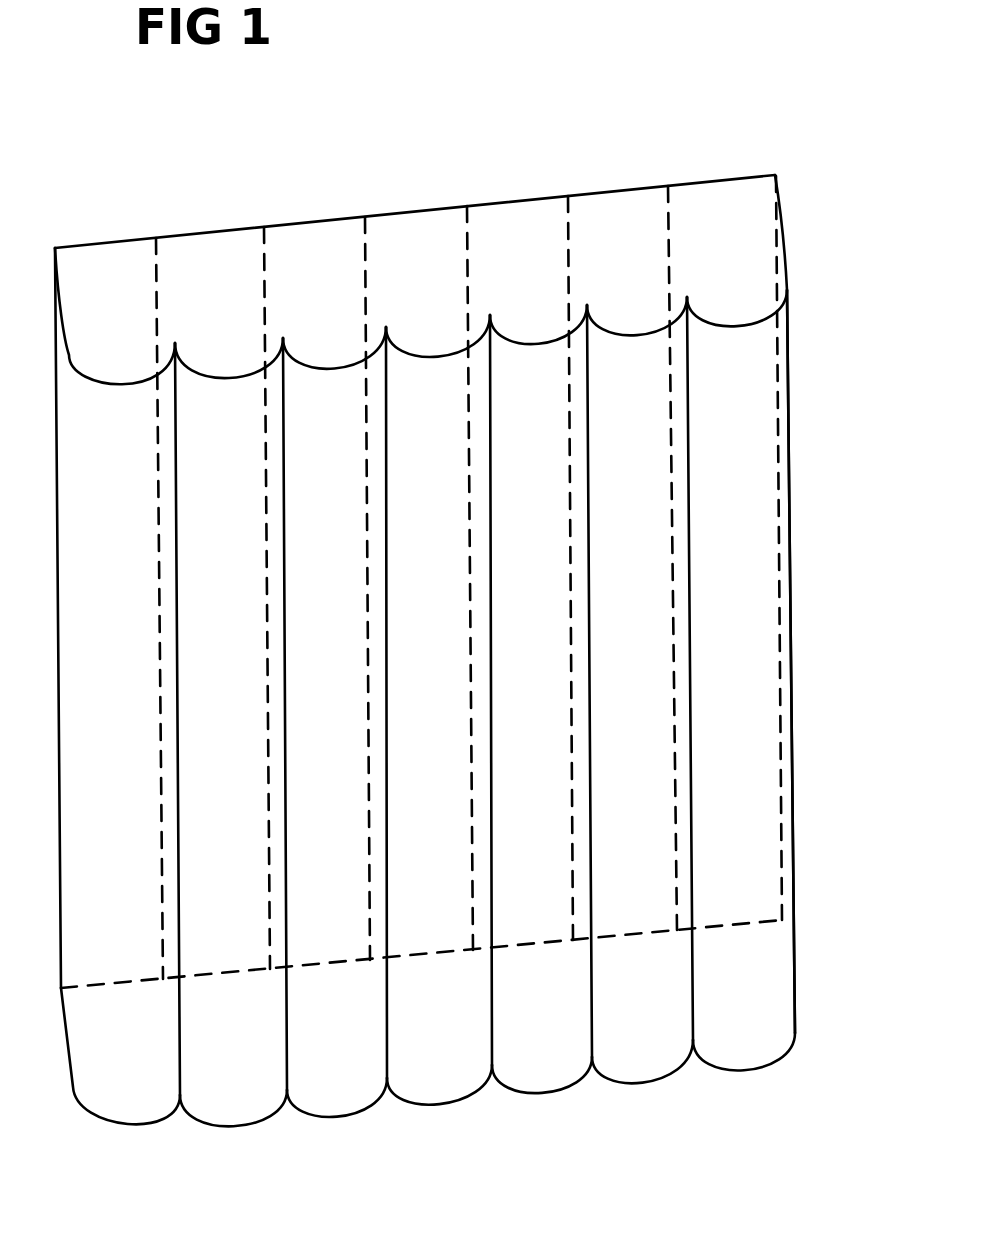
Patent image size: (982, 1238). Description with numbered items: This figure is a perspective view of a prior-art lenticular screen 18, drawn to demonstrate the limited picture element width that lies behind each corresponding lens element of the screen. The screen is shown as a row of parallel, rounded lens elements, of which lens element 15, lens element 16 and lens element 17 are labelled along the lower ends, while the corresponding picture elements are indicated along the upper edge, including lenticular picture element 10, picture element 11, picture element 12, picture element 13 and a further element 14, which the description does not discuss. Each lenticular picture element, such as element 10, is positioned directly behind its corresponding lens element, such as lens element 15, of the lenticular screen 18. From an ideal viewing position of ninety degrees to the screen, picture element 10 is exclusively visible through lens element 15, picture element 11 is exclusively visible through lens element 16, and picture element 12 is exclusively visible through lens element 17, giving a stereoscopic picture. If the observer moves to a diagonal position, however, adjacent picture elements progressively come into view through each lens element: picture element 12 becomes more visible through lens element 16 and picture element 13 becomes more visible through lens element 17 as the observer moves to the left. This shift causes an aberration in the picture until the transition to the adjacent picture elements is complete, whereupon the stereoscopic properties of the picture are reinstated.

The lenticular picture element 10 is at (103, 242).
The picture element 11 is at (208, 233).
The picture element 12 is at (315, 218).
The picture element 13 is at (415, 208).
The fifth compartment 14 is at (520, 198).
The lens element 15 is at (130, 1130).
The lens element 16 is at (237, 1130).
The lens element 17 is at (342, 1117).
The lenticular screen 18 is at (790, 390).